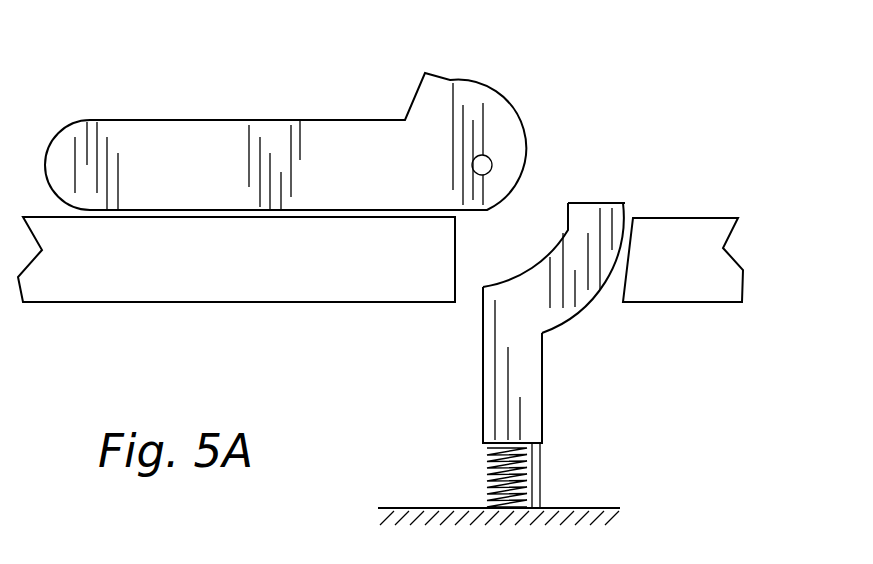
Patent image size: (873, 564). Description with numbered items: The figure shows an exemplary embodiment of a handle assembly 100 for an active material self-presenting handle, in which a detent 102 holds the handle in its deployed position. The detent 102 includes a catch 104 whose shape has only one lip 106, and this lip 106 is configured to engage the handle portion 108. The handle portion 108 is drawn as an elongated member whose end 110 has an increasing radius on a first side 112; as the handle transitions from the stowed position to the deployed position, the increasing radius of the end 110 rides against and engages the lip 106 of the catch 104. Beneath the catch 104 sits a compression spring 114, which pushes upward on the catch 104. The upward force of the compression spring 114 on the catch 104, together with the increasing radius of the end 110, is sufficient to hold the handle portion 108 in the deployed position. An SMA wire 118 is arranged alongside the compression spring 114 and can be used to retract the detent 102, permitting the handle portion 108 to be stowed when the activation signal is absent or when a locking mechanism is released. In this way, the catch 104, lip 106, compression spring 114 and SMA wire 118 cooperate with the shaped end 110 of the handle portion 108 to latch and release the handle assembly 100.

The handle assembly 100 is at (637, 60).
The detent 102 is at (617, 367).
The catch 104 is at (507, 330).
The lip 106 is at (592, 205).
The handle portion 108 is at (200, 118).
The end 110 is at (510, 152).
The first side 112 is at (438, 87).
The compression spring 114 is at (487, 477).
The SMA wire 118 is at (537, 477).